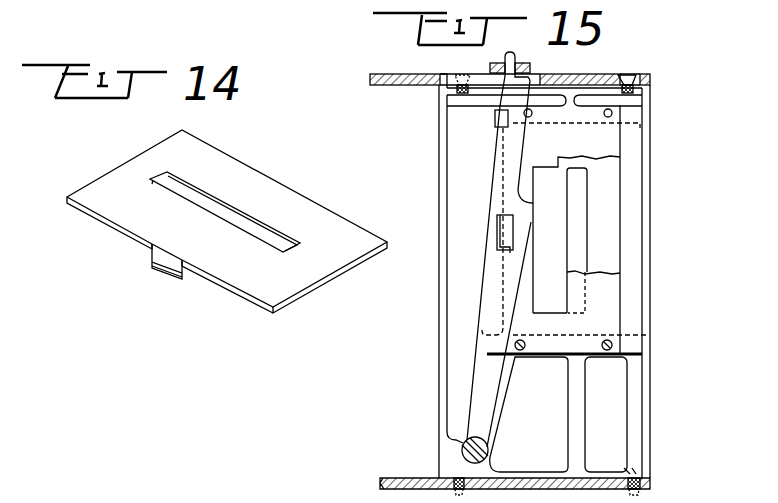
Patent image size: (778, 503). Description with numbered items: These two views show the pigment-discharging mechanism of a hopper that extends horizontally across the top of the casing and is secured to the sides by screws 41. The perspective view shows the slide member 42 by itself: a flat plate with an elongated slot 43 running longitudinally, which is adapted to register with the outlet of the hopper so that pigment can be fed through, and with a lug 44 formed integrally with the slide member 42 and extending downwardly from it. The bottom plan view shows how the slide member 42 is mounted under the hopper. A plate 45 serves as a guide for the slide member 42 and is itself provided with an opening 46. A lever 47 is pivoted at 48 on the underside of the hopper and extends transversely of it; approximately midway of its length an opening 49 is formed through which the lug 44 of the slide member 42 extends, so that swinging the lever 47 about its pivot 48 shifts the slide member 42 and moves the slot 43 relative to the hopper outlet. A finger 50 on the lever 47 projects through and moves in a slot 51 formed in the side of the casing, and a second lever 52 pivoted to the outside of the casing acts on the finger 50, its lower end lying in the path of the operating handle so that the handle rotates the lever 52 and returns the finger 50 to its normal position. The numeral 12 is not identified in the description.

In FIG. 15, the frame plate 12 is at (400, 76).
In FIG. 15, the screws 41 is at (458, 76).
In FIG. 14, the slide member 42 is at (123, 215).
In FIG. 15, the slide member 42 is at (635, 174).
In FIG. 14, the elongated slot 43 is at (248, 226).
In FIG. 15, the elongated slot 43 is at (578, 220).
In FIG. 14, the lug 44 is at (170, 268).
In FIG. 15, the lug 44 is at (498, 230).
In FIG. 15, the plate 45 is at (612, 307).
In FIG. 15, the opening 46 is at (553, 307).
In FIG. 15, the lever 47 is at (482, 393).
In FIG. 15, the pivot 48 is at (463, 448).
In FIG. 15, the opening 49 is at (508, 251).
In FIG. 15, the finger 50 is at (515, 54).
In FIG. 15, the slot 51 is at (442, 75).
In FIG. 15, the lever 52 is at (531, 68).